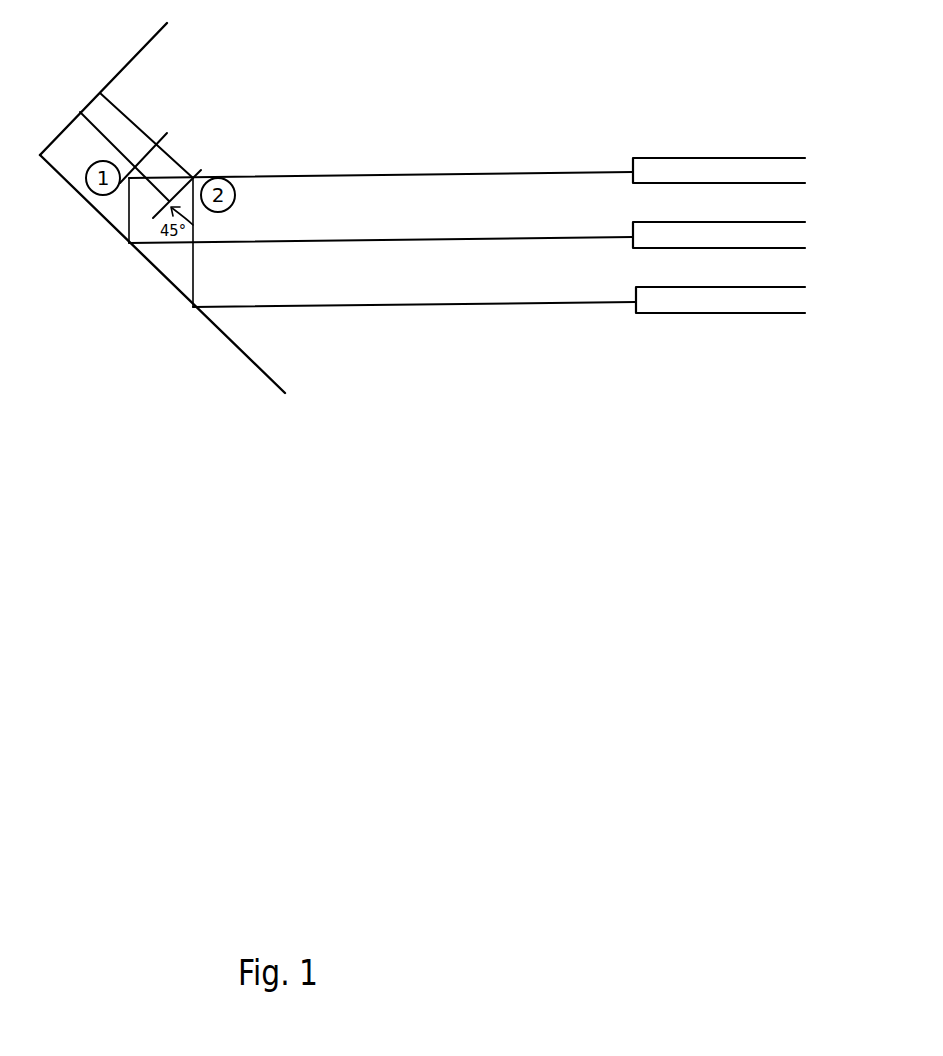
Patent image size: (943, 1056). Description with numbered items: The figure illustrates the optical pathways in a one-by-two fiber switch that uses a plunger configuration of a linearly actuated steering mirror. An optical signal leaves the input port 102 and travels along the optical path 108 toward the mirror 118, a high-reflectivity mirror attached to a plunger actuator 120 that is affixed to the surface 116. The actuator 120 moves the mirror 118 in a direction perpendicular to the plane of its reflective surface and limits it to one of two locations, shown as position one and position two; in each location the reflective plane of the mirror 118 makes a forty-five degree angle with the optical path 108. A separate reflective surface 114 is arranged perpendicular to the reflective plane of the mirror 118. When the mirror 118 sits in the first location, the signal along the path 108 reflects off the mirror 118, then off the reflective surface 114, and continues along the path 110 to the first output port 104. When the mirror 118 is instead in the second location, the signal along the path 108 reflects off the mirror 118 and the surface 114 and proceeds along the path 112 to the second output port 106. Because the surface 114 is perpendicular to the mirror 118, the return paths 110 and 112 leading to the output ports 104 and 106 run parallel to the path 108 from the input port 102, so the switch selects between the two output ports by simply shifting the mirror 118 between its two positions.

The input port 102 is at (740, 162).
The first output port 104 is at (740, 231).
The second output port 106 is at (741, 296).
The optical path 108 is at (381, 164).
The path 110 is at (381, 231).
The path 112 is at (414, 294).
The reflective surface 114 is at (220, 341).
The surface 116 is at (124, 58).
The mirror 118 is at (205, 169).
The plunger actuator 120 is at (136, 147).